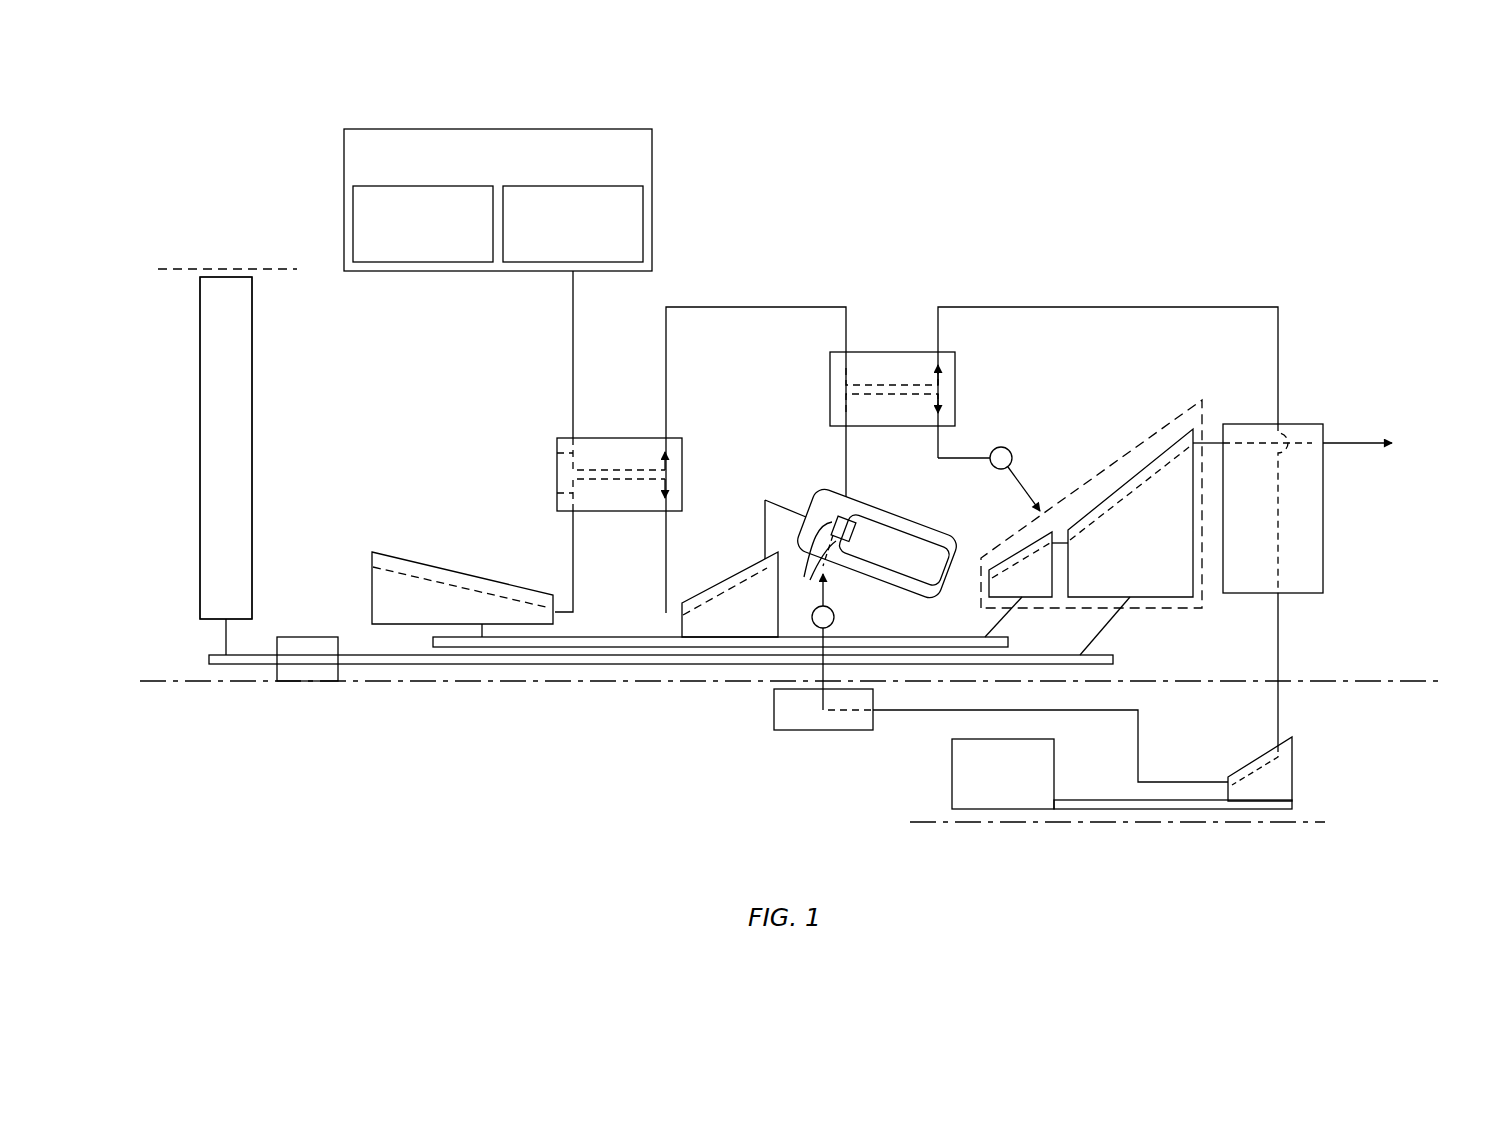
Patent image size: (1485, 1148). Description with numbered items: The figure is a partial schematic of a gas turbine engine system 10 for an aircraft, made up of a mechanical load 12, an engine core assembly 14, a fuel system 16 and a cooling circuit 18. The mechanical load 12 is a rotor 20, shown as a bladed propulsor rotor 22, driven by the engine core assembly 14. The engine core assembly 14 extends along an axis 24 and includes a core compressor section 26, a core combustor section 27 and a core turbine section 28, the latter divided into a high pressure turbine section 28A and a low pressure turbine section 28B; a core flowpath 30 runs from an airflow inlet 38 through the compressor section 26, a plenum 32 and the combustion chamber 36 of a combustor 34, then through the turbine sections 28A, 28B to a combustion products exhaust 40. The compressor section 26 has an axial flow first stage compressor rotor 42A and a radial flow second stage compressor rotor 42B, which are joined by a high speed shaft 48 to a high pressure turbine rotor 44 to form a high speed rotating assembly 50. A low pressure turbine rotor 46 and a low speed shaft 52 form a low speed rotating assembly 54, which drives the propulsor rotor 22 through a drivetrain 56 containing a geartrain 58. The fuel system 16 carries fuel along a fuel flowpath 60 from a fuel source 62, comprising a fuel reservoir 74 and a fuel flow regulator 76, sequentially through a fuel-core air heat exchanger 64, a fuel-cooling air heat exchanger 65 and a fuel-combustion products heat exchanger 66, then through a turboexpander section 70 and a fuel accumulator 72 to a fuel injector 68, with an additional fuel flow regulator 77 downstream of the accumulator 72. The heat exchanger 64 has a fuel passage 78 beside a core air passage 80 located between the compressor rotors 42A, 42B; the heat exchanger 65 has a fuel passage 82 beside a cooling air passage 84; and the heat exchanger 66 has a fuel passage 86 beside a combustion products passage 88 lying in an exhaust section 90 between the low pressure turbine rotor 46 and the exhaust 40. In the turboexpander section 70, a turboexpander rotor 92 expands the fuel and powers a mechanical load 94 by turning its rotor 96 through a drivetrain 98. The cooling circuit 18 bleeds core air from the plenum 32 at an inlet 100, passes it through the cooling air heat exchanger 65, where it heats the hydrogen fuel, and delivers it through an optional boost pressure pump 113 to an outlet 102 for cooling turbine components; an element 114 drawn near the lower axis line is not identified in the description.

The gas turbine engine system 10 is at (220, 145).
The mechanical load 12 is at (275, 375).
The engine core assembly 14 is at (588, 727).
The fuel system 16 is at (735, 240).
The cooling circuit 18 is at (985, 440).
The rotor 20 is at (252, 420).
The bladed propulsor rotor 22 is at (226, 448).
The axis 24 is at (155, 681).
The core compressor section 26 is at (467, 505).
The core combustor section 27 is at (790, 455).
The core turbine section 28 is at (1122, 423).
The high pressure turbine section 28A is at (1013, 547).
The low pressure turbine section 28B is at (1157, 440).
The core flowpath 30 is at (665, 563).
The plenum 32 is at (820, 503).
The combustor 34 is at (917, 520).
The combustion chamber 36 is at (916, 566).
The airflow inlet 38 is at (372, 566).
The combustion products exhaust 40 is at (1405, 440).
The first stage compressor rotor 42A is at (402, 624).
The second stage compressor rotor 42B is at (705, 640).
The high pressure turbine rotor 44 is at (1032, 597).
The low pressure turbine rotor 46 is at (1152, 597).
The high speed shaft 48 is at (905, 637).
The high speed rotating assembly 50 is at (360, 597).
The low speed shaft 52 is at (368, 664).
The low speed rotating assembly 54 is at (1130, 640).
The drivetrain 56 is at (284, 695).
The geartrain 58 is at (322, 676).
The fuel flowpath 60 is at (777, 307).
The fuel source 62 is at (576, 167).
The fuel-core air heat exchanger 64 is at (620, 437).
The fuel-cooling air heat exchanger 65 is at (893, 352).
The fuel-combustion products heat exchanger 66 is at (1325, 513).
The fuel injector 68 is at (811, 566).
The turboexpander section 70 is at (1317, 775).
The fuel accumulator 72 is at (817, 730).
The fuel reservoir 74 is at (439, 253).
The fuel flow regulator 76 is at (589, 253).
The additional fuel flow regulator 77 is at (812, 620).
The internal fuel passage 78 is at (557, 453).
The internal core air passage 80 is at (557, 493).
The internal fuel passage 82 is at (830, 368).
The internal cooling air passage 84 is at (830, 412).
The internal fuel passage 86 is at (1280, 573).
The internal combustion products passage 88 is at (1312, 443).
The exhaust section 90 is at (1307, 380).
The turboexpander rotor 92 is at (1293, 755).
The mechanical load 94 is at (927, 780).
The rotor 96 is at (1018, 791).
The drivetrain 98 is at (1117, 815).
The inlet 100 is at (850, 485).
The outlet 102 is at (1043, 510).
The boost pressure pump 113 is at (1005, 450).
The lower centerline 114 is at (1295, 822).